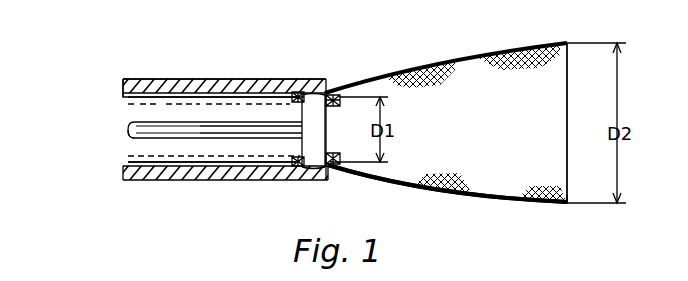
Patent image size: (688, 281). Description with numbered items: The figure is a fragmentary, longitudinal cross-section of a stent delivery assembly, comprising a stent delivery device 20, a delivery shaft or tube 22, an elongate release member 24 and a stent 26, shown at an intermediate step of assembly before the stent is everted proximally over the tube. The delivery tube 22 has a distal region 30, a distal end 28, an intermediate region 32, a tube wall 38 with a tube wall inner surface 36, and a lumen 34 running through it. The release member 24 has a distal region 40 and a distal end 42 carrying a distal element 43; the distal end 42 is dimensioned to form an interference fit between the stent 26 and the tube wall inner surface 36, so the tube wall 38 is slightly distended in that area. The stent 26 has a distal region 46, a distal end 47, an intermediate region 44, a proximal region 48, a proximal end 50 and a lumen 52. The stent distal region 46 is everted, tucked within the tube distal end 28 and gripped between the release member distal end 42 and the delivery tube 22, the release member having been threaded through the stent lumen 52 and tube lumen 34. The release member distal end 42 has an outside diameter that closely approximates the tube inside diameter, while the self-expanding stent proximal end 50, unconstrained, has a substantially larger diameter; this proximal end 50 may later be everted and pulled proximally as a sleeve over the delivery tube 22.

The stent delivery device 20 is at (202, 57).
The delivery shaft or tube 22 is at (138, 75).
The elongate release member 24 is at (173, 120).
The stent 26 is at (417, 60).
The distal end 28 is at (300, 180).
The distal region 30 is at (210, 181).
The intermediate region 32 is at (127, 76).
The lumen 34 is at (135, 150).
The tube wall inner surface 36 is at (127, 158).
The tube wall 38 is at (137, 182).
The distal region 40 is at (255, 132).
The distal end 42 is at (322, 116).
The distal element 43 is at (299, 85).
The intermediate region 44 is at (408, 186).
The distal region 46 is at (325, 171).
The distal end 47 is at (295, 90).
The proximal region 48 is at (537, 205).
The proximal end 50 is at (570, 205).
The lumen 52 is at (547, 122).